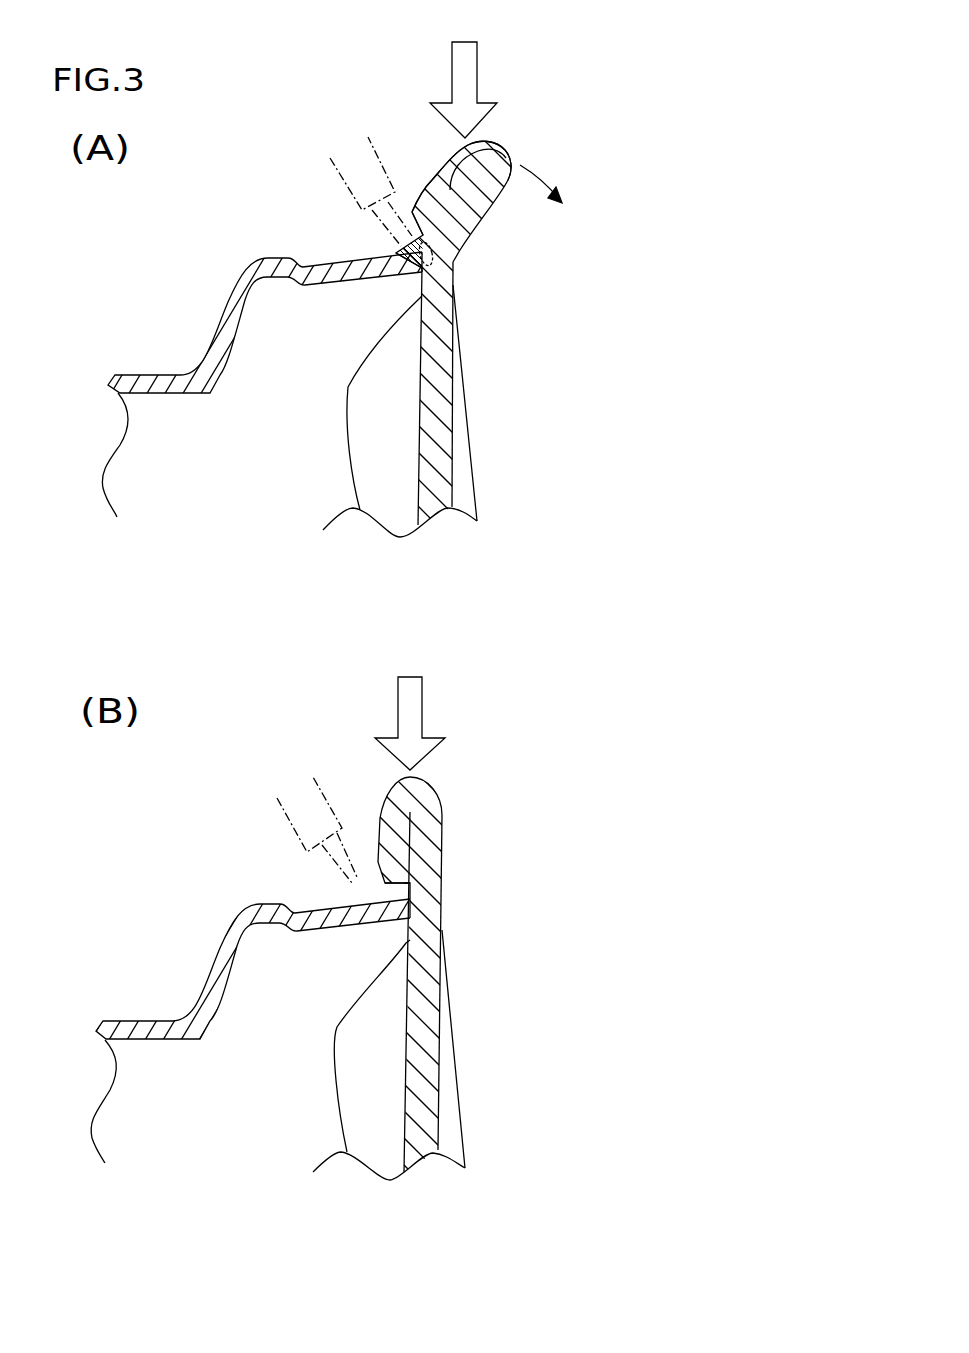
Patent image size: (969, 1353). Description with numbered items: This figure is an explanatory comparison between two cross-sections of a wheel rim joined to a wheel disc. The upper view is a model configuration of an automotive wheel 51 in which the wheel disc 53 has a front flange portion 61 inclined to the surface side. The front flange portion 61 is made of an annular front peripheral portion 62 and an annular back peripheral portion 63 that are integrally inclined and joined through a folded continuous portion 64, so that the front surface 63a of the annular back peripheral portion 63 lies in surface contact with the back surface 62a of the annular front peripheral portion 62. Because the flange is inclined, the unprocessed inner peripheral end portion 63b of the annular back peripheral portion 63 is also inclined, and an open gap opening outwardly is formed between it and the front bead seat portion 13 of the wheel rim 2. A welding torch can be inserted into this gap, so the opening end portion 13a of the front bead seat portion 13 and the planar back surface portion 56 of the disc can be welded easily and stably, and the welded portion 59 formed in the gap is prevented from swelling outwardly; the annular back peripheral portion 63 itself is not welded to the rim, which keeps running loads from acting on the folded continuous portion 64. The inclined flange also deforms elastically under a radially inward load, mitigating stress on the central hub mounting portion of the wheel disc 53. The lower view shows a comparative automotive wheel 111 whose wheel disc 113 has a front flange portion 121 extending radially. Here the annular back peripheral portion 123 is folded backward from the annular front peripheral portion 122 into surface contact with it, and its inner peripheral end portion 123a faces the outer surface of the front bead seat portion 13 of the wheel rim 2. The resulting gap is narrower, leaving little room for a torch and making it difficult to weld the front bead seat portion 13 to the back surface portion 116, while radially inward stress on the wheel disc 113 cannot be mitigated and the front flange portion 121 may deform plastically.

The wheel rim 2 is at (160, 378).
The front bead seat portion 13 is at (330, 274).
The opening end portion 13a is at (410, 274).
The automotive wheel 51 is at (703, 297).
The wheel disc 53 is at (443, 467).
The back surface portion 56 is at (400, 249).
The welded portion 59 is at (455, 265).
The front flange portion 61 is at (473, 203).
The annular front peripheral portion 62 is at (468, 238).
The back surface 62a is at (458, 160).
The annular back peripheral portion 63 is at (430, 181).
The front surface 63a is at (462, 240).
The inner peripheral end portion 63b is at (413, 212).
The folded continuous portion 64 is at (433, 184).
The automotive wheel 111 is at (620, 988).
The wheel disc 113 is at (427, 1113).
The back surface portion 116 is at (407, 897).
The front flange portion 121 is at (427, 797).
The annular front peripheral portion 122 is at (428, 852).
The annular back peripheral portion 123 is at (388, 835).
The inner peripheral end portion 123a is at (400, 882).